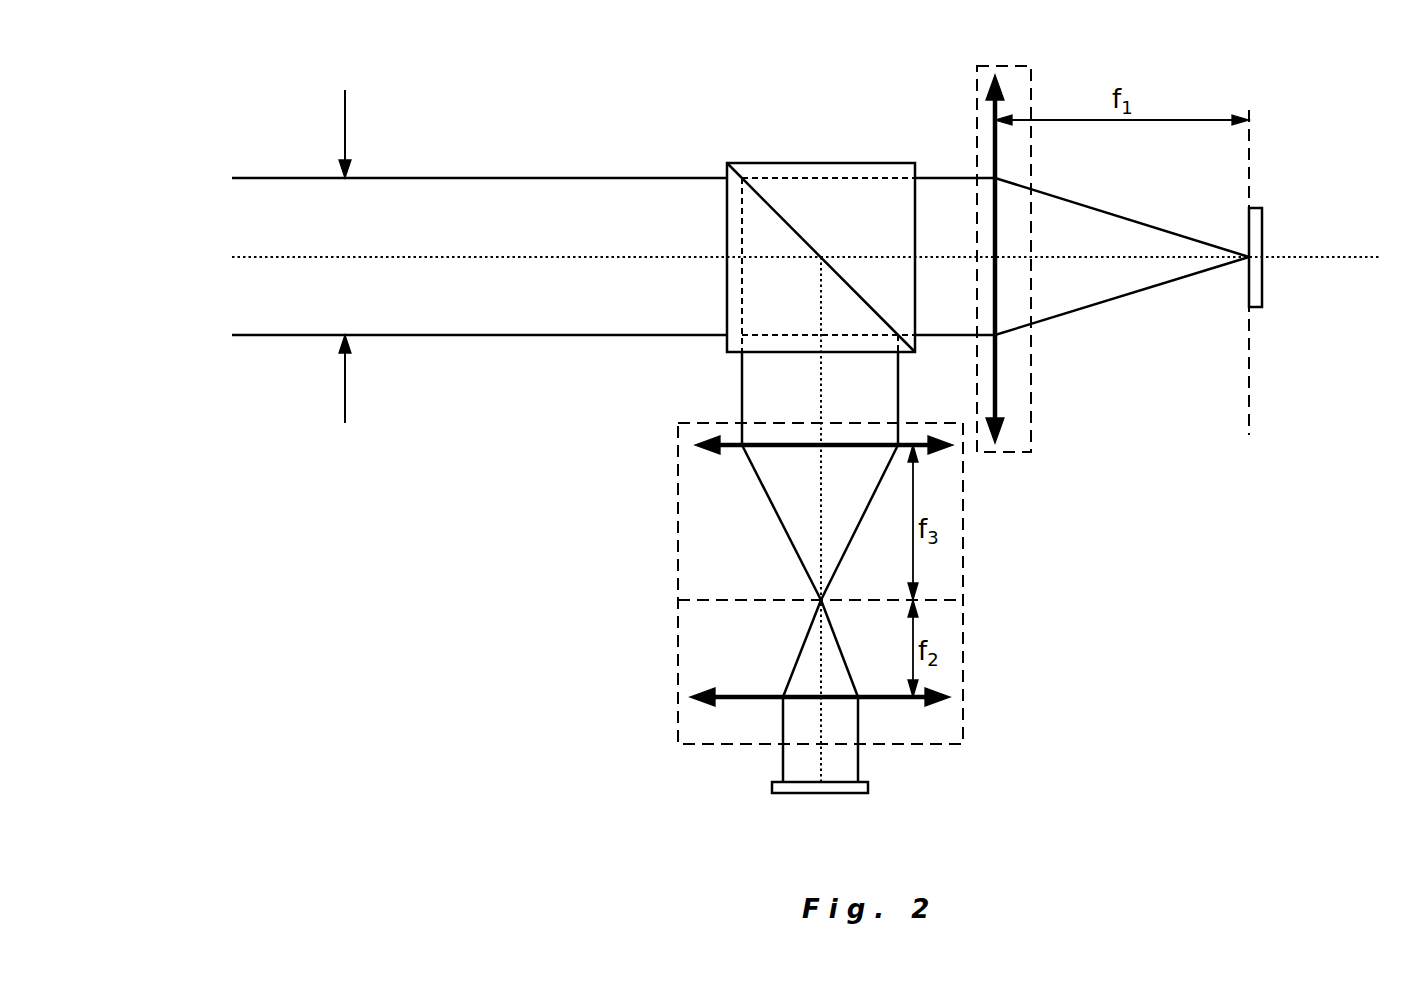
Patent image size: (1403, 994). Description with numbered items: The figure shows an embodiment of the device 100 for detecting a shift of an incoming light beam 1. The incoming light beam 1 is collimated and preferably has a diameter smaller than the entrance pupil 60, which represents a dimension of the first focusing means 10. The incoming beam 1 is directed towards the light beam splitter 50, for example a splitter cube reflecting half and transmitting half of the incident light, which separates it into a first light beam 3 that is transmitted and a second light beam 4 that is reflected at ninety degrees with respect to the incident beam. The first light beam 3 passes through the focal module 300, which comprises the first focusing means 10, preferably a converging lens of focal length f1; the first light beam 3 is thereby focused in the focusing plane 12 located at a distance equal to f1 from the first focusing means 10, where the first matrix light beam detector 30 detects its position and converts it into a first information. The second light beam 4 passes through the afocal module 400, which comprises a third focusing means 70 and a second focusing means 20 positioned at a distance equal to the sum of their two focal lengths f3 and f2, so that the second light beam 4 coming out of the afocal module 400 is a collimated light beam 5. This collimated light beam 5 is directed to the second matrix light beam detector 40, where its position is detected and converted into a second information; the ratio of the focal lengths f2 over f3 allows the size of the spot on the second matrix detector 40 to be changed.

The device for detecting a shift of an incoming light beam 100 is at (236, 98).
The incoming light beam 1 is at (286, 337).
The entrance pupil 60 is at (343, 112).
The light beam splitter 50 is at (765, 200).
The first light beam 3 is at (962, 178).
The first focusing means 10 is at (990, 142).
The focal module 300 is at (1030, 96).
The focusing plane 12 is at (1252, 160).
The first matrix light beam detector 30 is at (1258, 232).
The second light beam 4 is at (742, 407).
The third focusing means 70 is at (741, 443).
The afocal module 400 is at (965, 625).
The second focusing means 20 is at (749, 690).
The collimated light beam 5 is at (858, 737).
The second matrix light beam detector 40 is at (858, 790).